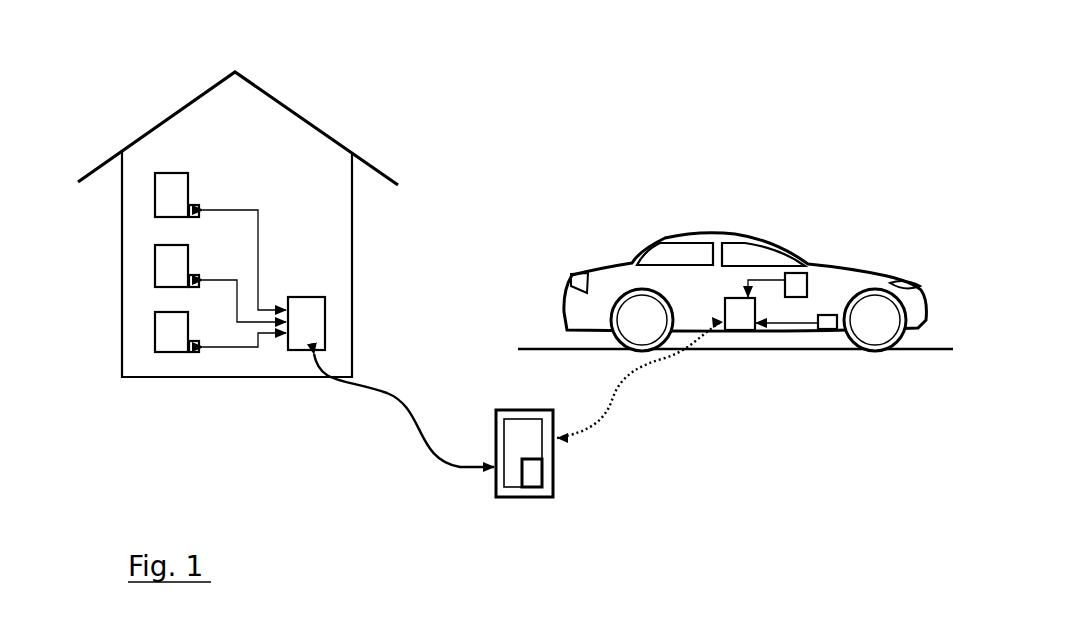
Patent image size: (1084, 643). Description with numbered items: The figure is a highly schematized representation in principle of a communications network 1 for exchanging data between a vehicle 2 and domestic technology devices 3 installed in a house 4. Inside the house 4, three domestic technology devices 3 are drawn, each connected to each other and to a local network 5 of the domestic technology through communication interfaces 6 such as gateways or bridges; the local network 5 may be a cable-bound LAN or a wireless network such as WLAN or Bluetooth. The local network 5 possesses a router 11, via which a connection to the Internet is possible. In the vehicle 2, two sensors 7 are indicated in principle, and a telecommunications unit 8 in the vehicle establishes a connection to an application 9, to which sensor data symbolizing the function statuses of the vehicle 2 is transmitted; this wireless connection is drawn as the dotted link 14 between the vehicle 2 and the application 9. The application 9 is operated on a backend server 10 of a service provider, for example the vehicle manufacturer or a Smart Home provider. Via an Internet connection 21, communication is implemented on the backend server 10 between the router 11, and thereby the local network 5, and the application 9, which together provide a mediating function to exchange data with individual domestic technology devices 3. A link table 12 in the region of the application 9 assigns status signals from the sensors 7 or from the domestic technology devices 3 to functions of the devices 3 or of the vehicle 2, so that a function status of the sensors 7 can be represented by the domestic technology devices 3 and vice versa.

The communications network 1 is at (489, 105).
The vehicle 2 is at (758, 233).
The domestic technology devices 3 is at (170, 195).
The house 4 is at (166, 109).
The local network 5 is at (241, 265).
The communication interfaces 6 is at (199, 208).
The sensors 7 is at (828, 320).
The telecommunications unit 8 is at (742, 315).
The application 9 is at (522, 433).
The backend server 10 is at (548, 492).
The router 11 is at (313, 317).
The link table 12 is at (533, 468).
The wireless communication link 14 is at (618, 387).
The Internet connection 21 is at (388, 393).